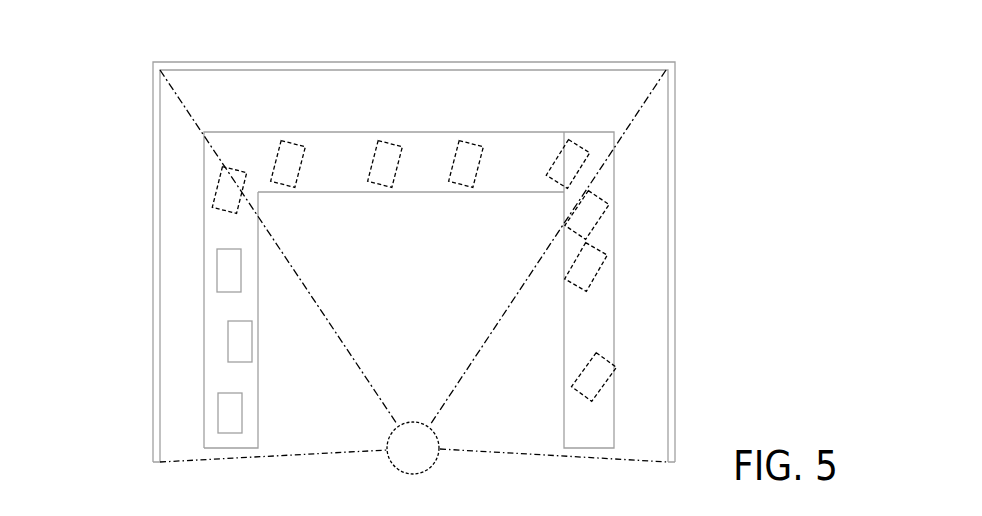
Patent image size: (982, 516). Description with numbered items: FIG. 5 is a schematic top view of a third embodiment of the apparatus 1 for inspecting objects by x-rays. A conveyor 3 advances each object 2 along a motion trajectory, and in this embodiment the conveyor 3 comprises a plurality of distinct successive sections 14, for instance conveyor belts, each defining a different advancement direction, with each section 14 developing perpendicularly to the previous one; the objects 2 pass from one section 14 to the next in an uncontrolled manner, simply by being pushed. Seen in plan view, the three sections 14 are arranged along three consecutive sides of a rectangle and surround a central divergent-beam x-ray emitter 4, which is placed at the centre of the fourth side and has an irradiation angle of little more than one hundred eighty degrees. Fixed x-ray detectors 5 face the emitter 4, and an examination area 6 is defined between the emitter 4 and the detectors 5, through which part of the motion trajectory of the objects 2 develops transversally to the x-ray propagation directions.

The lighting device 1 is at (690, 97).
The object 2 is at (467, 158).
The conveyor 3 is at (642, 209).
The x-ray emitter 4 is at (410, 446).
The x-ray detector 5 is at (391, 68).
The examination area 6 is at (271, 459).
The section 14 is at (522, 166).